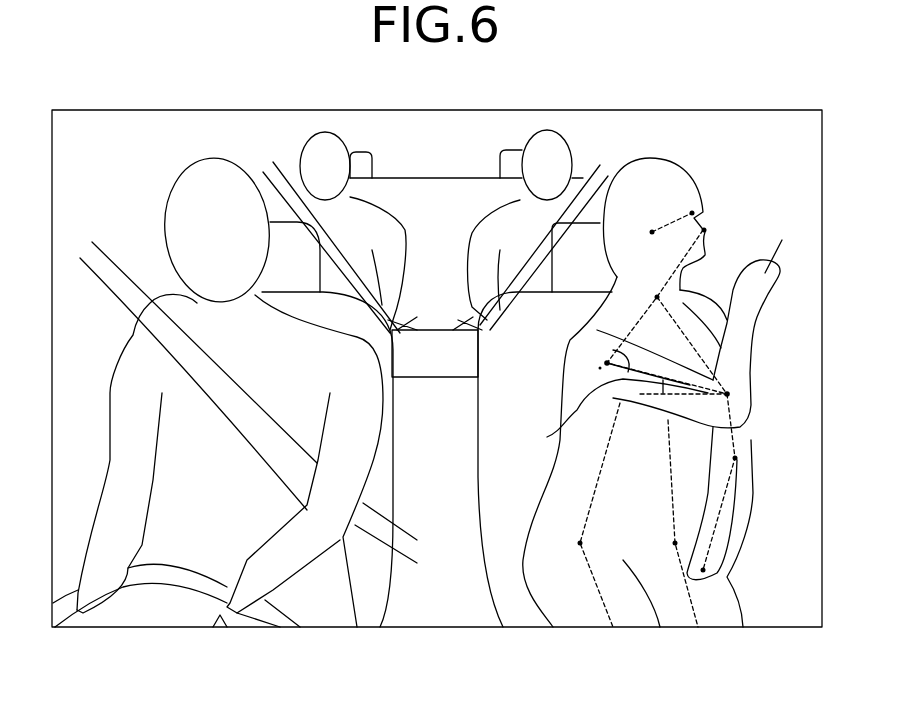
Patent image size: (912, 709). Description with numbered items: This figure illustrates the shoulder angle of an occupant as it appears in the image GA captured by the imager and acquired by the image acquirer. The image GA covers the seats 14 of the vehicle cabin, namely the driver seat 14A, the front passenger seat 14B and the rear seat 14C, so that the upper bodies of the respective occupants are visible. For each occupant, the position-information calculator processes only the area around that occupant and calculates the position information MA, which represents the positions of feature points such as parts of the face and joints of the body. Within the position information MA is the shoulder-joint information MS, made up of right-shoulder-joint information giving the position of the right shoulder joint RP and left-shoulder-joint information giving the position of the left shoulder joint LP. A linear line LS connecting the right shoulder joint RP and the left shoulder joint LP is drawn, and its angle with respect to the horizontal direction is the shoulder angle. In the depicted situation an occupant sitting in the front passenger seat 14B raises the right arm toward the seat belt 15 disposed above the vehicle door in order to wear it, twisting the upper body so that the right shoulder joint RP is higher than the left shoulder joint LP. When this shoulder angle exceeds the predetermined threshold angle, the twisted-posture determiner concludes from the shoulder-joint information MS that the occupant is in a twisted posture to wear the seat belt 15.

The seats 14 is at (437, 374).
The driver seat 14A is at (367, 620).
The front passenger seat 14B is at (510, 587).
The rear seat 14C is at (432, 192).
The seat belt 15 is at (100, 277).
The image GA is at (800, 628).
The linear line LS is at (613, 350).
The right shoulder joint RP is at (587, 374).
The left shoulder joint LP is at (741, 406).
The position information MA is at (679, 443).
The shoulder-joint information MS is at (766, 377).